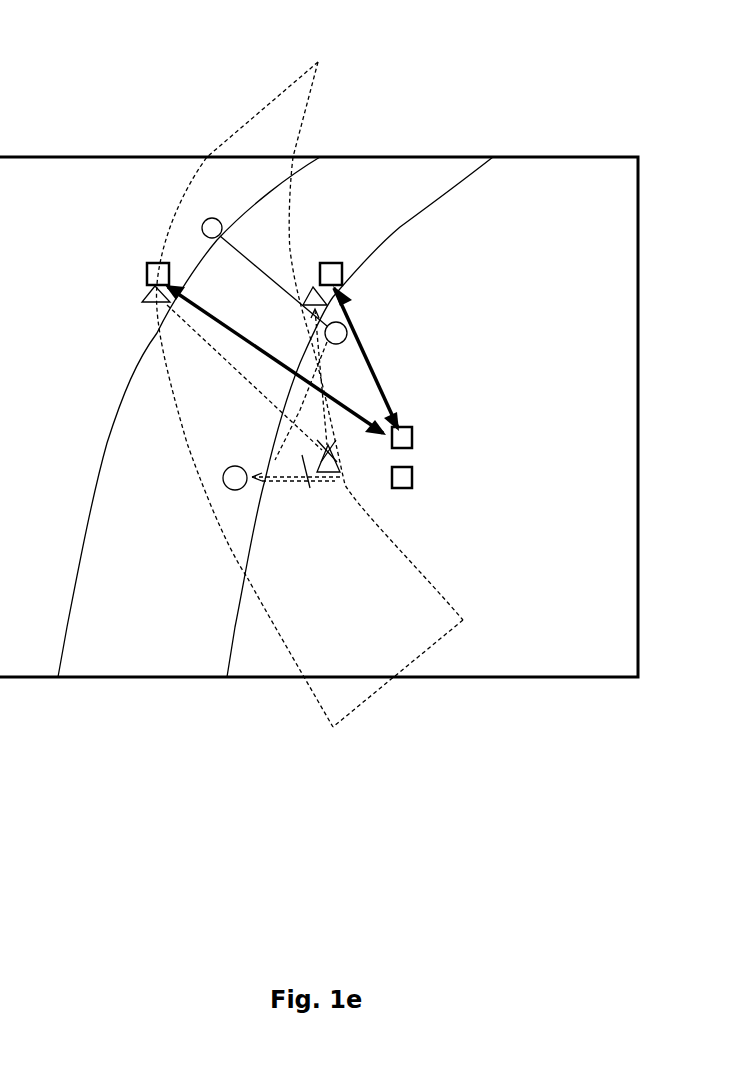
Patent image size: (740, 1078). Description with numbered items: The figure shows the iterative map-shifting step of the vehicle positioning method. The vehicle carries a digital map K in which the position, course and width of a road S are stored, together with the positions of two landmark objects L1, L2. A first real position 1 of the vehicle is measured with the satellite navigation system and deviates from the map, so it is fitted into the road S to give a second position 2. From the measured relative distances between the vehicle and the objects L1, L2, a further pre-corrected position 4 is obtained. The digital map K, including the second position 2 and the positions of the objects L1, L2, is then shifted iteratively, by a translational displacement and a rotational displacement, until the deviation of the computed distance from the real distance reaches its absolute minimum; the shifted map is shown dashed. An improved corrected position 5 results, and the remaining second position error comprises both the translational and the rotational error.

The digital map K is at (213, 157).
The road S is at (150, 568).
The first object L1 is at (202, 230).
The second object L2 is at (322, 266).
The first real position 1 is at (412, 480).
The second position 2 is at (225, 473).
The position 4 is at (412, 440).
The improved corrected position 5 is at (345, 478).